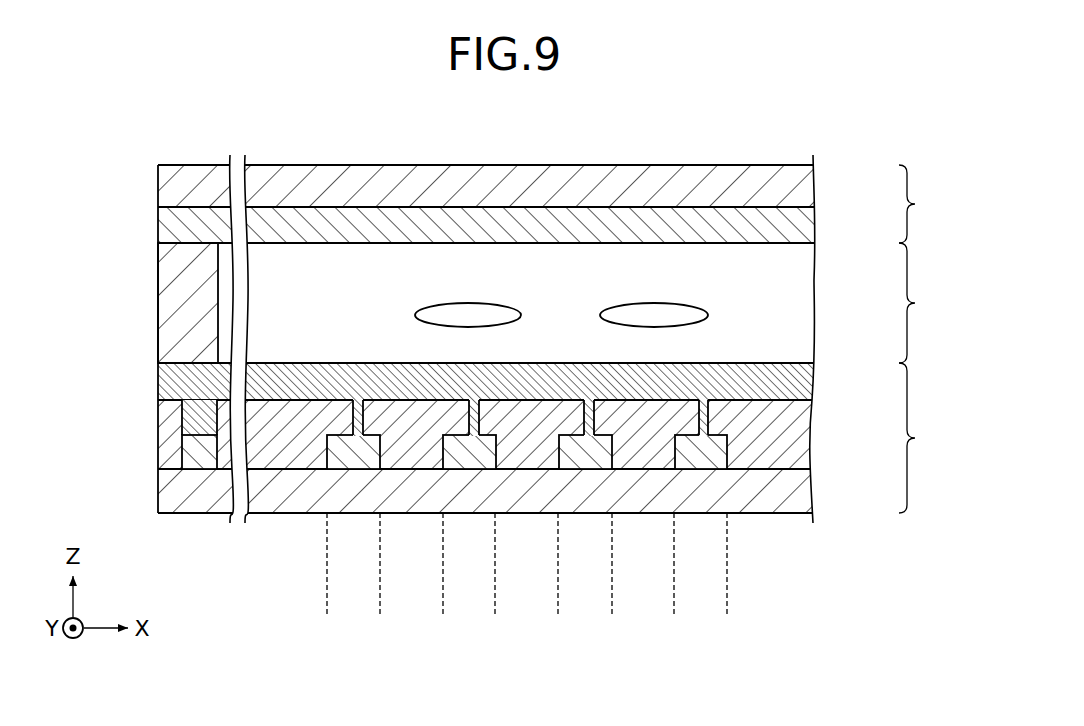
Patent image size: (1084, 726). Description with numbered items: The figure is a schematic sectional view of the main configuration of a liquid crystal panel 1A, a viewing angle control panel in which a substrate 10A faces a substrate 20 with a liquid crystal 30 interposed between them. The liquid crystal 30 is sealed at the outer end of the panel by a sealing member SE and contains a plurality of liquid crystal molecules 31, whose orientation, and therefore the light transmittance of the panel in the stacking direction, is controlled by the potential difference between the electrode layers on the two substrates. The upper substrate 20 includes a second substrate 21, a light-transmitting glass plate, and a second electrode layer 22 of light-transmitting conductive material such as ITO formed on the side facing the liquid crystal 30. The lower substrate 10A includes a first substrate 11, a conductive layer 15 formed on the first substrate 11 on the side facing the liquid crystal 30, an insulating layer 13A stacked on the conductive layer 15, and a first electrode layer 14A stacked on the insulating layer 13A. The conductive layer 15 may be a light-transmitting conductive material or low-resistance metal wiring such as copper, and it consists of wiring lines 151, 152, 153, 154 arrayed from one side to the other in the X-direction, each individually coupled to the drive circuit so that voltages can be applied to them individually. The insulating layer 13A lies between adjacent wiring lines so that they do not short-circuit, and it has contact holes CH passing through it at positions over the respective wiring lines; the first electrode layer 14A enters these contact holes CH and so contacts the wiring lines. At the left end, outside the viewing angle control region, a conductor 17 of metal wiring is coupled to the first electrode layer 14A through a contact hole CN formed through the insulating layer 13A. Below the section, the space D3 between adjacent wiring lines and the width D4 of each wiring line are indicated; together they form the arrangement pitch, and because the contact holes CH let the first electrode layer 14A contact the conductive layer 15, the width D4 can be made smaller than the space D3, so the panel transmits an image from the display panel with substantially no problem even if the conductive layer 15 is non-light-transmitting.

The liquid crystal panel 1A is at (843, 143).
The substrate 20 is at (923, 204).
The second substrate 21 is at (796, 182).
The second electrode layer 22 is at (796, 228).
The liquid crystal 30 is at (923, 303).
The liquid crystal molecules 31 is at (693, 313).
The sealing member SE is at (176, 302).
The contact hole CH is at (474, 393).
The contact hole CN is at (197, 418).
The conductor 17 is at (200, 452).
The first electrode layer 14A is at (796, 382).
The insulating layer 13A is at (796, 418).
The conductive layer 15 is at (606, 499).
The first substrate 11 is at (796, 488).
The substrate 10A is at (931, 438).
The wiring line 151 is at (360, 458).
The wiring line 152 is at (478, 458).
The wiring line 153 is at (592, 458).
The wiring line 154 is at (707, 458).
The space D3 is at (380, 588).
The width D4 is at (380, 607).